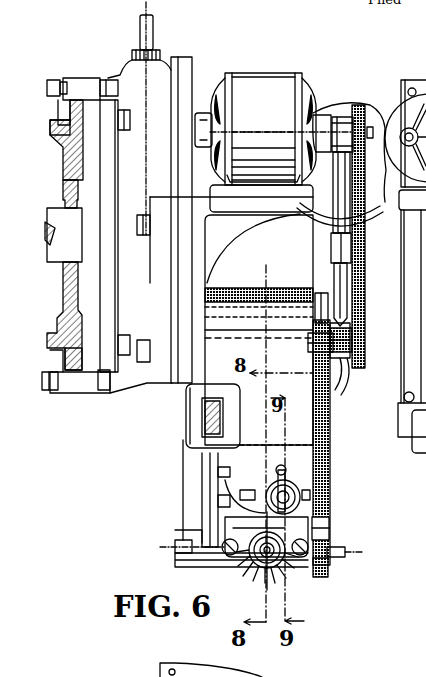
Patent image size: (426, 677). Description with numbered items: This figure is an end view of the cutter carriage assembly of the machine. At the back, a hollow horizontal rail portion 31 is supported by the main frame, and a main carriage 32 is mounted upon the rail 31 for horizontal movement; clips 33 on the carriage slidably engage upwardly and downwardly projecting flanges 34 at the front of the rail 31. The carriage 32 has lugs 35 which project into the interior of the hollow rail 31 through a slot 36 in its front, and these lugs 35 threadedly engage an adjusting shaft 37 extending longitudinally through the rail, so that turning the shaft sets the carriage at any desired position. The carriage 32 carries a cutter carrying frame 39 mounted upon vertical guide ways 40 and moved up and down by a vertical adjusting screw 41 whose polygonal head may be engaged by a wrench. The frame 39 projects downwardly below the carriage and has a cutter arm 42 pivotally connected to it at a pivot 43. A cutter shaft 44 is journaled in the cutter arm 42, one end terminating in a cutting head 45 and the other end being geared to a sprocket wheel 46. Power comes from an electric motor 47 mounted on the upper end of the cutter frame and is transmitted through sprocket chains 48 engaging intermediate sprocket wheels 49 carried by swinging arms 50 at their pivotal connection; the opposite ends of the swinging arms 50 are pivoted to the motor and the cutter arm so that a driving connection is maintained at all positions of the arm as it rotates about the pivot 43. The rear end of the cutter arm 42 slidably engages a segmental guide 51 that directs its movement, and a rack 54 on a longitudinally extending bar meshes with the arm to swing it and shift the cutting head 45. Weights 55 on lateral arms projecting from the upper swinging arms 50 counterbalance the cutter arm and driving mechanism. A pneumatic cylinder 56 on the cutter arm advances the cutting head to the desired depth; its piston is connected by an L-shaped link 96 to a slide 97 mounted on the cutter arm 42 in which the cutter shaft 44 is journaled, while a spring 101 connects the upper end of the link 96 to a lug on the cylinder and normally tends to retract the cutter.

The hollow horizontal rail portion 31 is at (63, 312).
The main carriage 32 is at (81, 82).
The clips 33 is at (54, 242).
The flanges 34 is at (85, 100).
The lugs 35 is at (62, 210).
The slot 36 is at (64, 178).
The adjusting shaft 37 is at (49, 238).
The cutter carrying frame 39 is at (202, 263).
The vertical guide ways 40 is at (183, 66).
The vertical adjusting screw 41 is at (153, 28).
The cutter arm 42 is at (228, 523).
The pivot 43 is at (176, 548).
The cutter shaft 44 is at (286, 568).
The cutting head 45 is at (262, 567).
The sprocket wheel 46 is at (330, 570).
The electric motor 47 is at (405, 255).
The sprocket chains 48 is at (330, 431).
The intermediate sprocket wheels 49 is at (311, 343).
The swinging arms 50 is at (347, 205).
The segmental guide 51 is at (318, 292).
The racks 54 is at (215, 455).
The weights 55 is at (344, 112).
The pneumatic cylinder 56 is at (270, 484).
The L-shaped link 96 is at (288, 482).
The slide 97 is at (318, 532).
The spring 101 is at (276, 466).